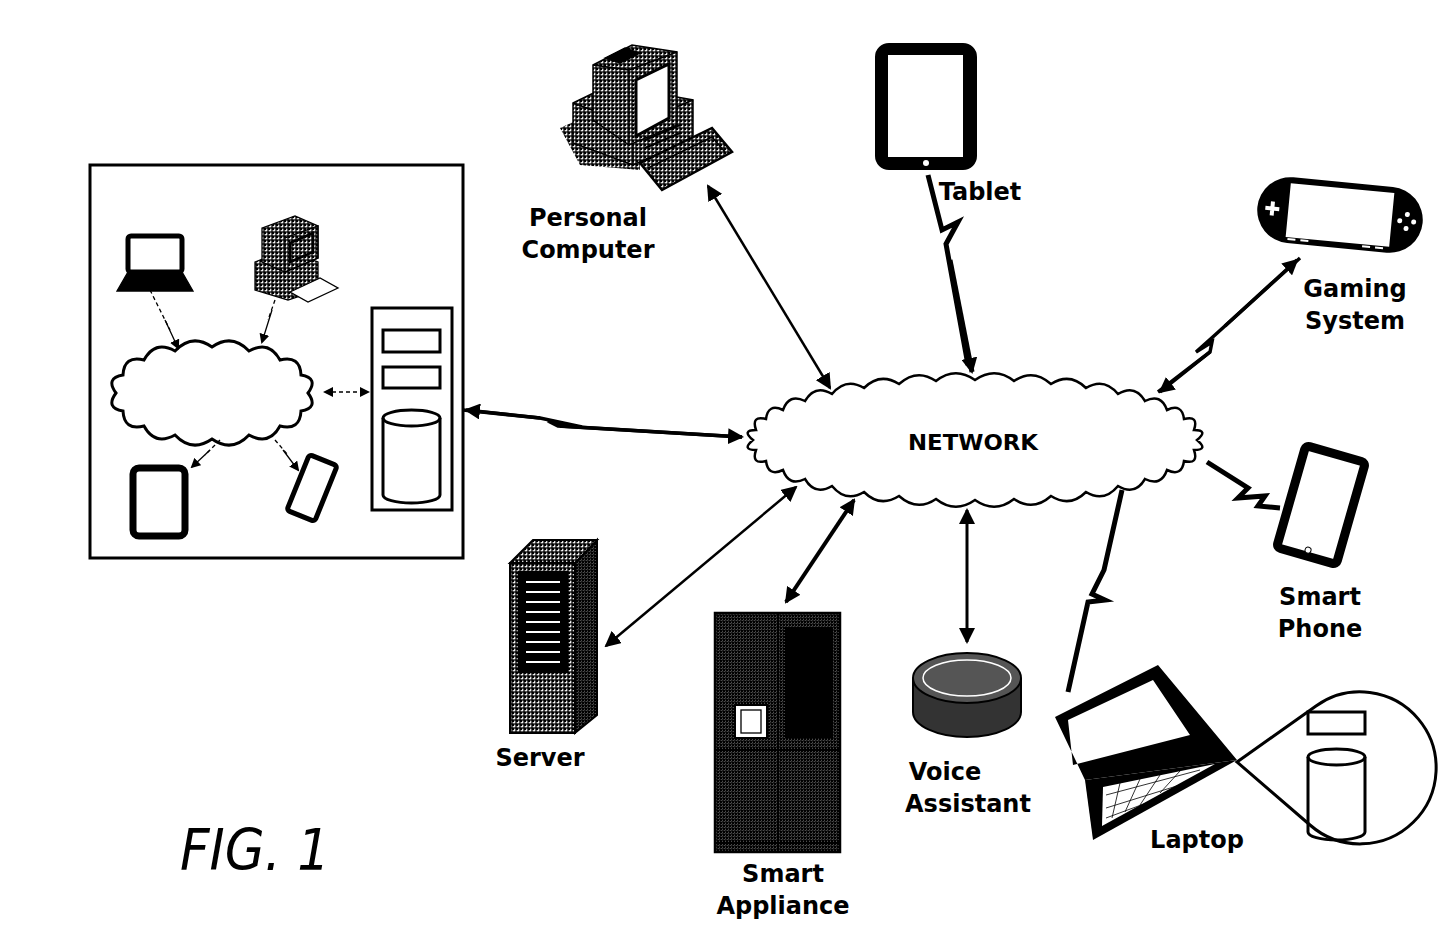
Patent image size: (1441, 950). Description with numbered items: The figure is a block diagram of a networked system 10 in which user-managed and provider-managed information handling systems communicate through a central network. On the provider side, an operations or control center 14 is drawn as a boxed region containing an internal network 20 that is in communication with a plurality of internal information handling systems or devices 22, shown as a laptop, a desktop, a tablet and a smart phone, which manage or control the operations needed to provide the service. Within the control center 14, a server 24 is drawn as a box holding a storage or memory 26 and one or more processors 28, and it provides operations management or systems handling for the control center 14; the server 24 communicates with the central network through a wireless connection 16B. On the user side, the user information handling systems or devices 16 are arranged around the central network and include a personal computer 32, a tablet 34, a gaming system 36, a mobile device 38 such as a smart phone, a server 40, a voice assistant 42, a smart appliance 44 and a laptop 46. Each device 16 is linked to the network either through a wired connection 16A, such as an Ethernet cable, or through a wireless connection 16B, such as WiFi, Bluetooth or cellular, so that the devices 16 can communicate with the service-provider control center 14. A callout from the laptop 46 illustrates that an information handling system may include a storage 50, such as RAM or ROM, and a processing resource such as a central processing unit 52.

The networked system 10 is at (1148, 108).
The control center 14 is at (235, 157).
The user information handling systems or devices 16 is at (556, 138).
The wired connections 16A is at (790, 318).
The wireless connections 16B is at (612, 420).
The network 20 is at (308, 358).
The internal information handling systems or devices 22 is at (175, 232).
The server 24 is at (455, 308).
The storage or memory 26 is at (442, 495).
The processors 28 is at (442, 385).
The personal computer 32 is at (680, 55).
The tablet 34 is at (965, 43).
The gaming system 36 is at (1348, 175).
The mobile device 38 is at (1348, 562).
The server 40 is at (598, 715).
The voice assistant 42 is at (915, 680).
The smart appliance 44 is at (840, 852).
The laptop 46 is at (1158, 668).
The storage 50 is at (1352, 840).
The central processing unit 52 is at (1365, 712).